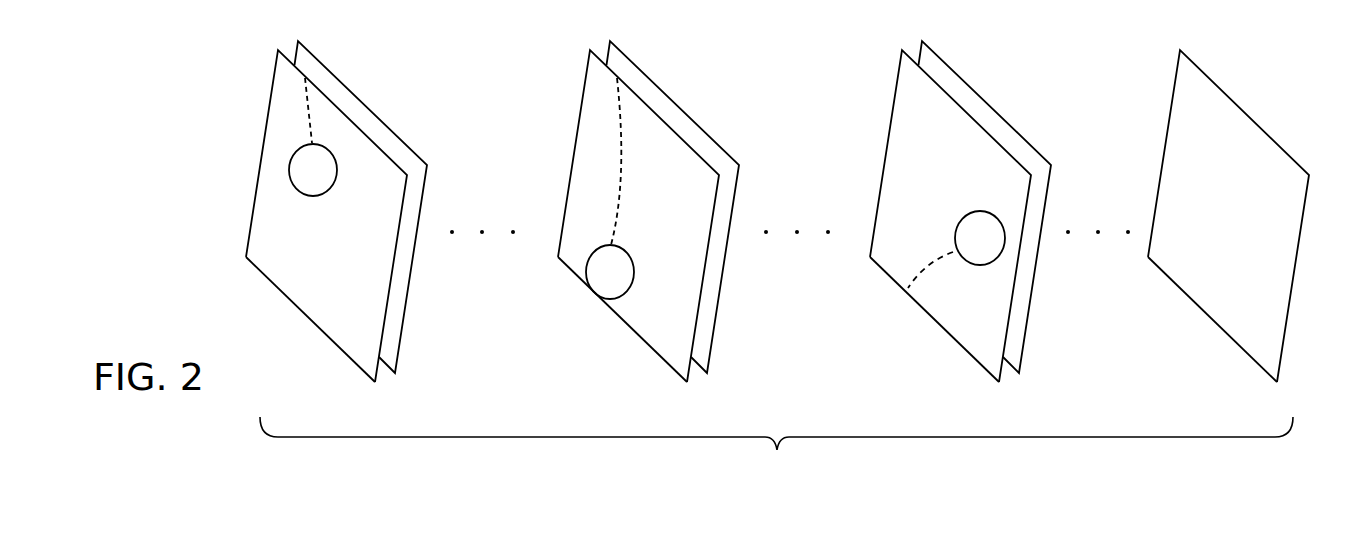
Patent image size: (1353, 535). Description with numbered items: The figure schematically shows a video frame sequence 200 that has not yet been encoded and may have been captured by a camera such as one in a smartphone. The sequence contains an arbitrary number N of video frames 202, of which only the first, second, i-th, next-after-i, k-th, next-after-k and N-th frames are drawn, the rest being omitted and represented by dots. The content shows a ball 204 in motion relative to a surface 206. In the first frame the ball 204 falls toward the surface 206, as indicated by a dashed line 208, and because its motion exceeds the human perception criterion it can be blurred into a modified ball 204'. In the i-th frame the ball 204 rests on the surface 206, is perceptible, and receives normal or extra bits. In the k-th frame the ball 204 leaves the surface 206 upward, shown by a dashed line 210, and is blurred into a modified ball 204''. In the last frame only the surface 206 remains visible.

The video frame sequence 200 is at (776, 450).
The video frame 202 is at (1263, 372).
The ball 204 is at (689, 208).
The modified ball 204' is at (339, 194).
The modified ball 204'' is at (952, 216).
The surface 206 is at (307, 315).
The dashed line 208 is at (310, 102).
The dashed line 210 is at (950, 253).